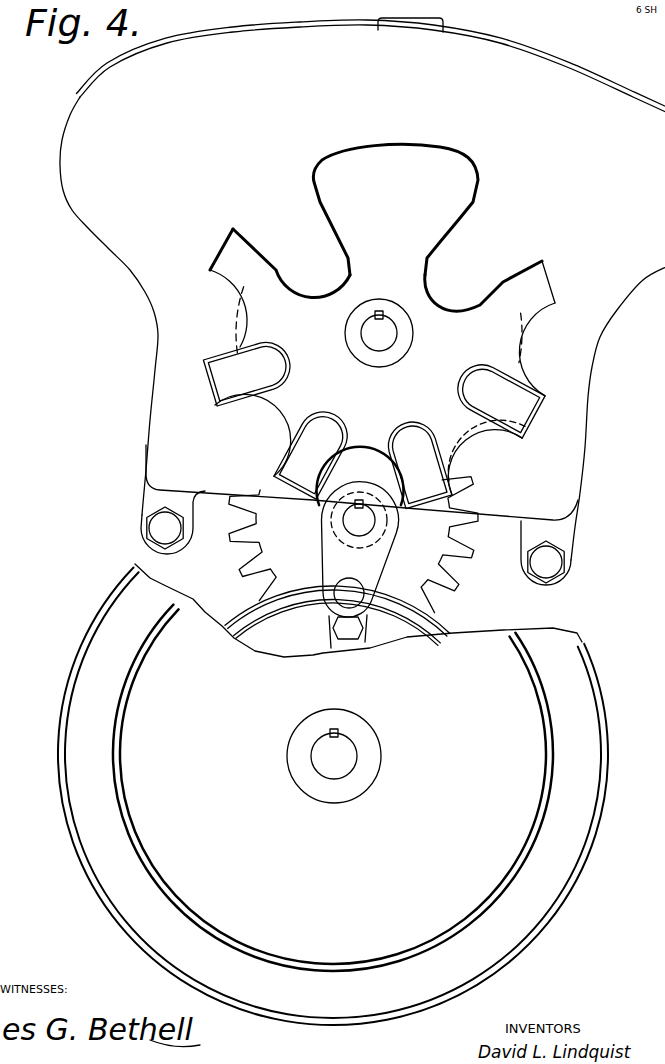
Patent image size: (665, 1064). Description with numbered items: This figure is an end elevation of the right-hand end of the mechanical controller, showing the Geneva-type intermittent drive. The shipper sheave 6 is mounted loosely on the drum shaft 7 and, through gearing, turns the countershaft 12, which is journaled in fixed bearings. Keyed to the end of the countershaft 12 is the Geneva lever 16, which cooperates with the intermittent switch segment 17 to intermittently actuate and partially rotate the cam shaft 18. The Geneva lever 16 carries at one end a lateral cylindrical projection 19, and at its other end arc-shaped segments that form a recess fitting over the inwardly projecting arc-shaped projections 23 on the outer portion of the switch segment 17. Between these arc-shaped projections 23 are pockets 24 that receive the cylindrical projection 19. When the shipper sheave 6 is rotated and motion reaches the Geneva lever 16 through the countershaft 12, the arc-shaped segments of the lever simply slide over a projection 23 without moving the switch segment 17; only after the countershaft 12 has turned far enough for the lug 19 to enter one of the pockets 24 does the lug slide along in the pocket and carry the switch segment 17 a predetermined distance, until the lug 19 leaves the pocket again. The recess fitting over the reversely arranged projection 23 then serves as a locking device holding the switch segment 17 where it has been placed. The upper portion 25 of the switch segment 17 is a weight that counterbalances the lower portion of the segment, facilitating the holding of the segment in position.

The shipper sheave 6 is at (587, 758).
The drum shaft 7 is at (340, 757).
The countershaft 12 is at (352, 522).
The Geneva lever 16 is at (383, 557).
The intermittent switch segment 17 is at (502, 355).
The cam shaft 18 is at (386, 342).
The lateral cylindrical projection 19 is at (356, 591).
The arc-shaped projections 23 is at (462, 445).
The pockets 24 is at (458, 497).
The upper portion of the segment 25 is at (465, 188).